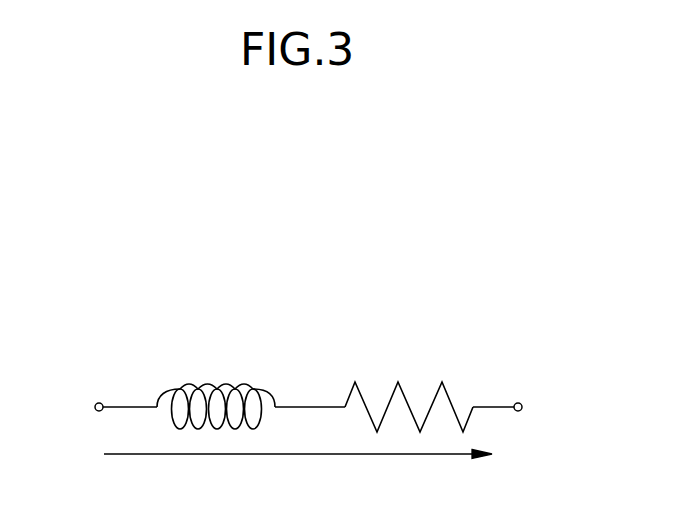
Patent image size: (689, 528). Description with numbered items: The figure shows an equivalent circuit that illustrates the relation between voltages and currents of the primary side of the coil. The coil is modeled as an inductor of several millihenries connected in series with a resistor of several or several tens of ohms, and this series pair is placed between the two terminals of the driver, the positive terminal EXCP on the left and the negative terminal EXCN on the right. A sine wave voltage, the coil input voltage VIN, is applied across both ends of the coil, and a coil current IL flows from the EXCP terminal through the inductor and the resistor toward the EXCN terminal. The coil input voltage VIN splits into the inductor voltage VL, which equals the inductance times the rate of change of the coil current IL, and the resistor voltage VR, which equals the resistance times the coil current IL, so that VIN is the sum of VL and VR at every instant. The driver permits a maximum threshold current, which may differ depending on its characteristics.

The positive driver output (excitation terminal) EXCP is at (98, 406).
The negative driver output (excitation terminal) EXCN is at (545, 406).
The inductor voltage VL is at (181, 365).
The resistor voltage VR is at (374, 365).
The coil current IL is at (298, 468).
The coil input voltage VIN is at (177, 300).